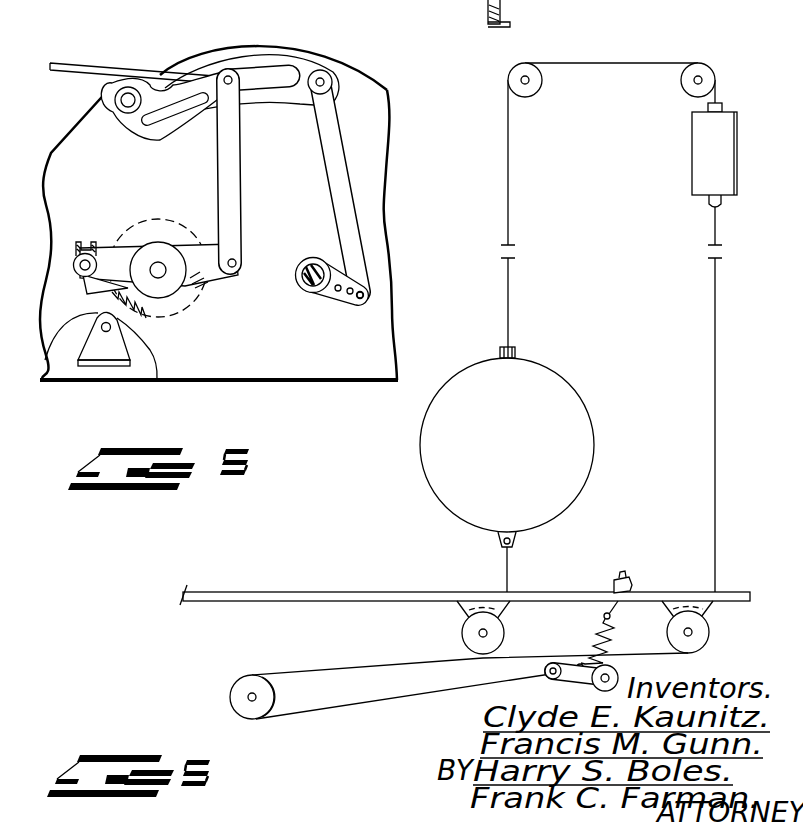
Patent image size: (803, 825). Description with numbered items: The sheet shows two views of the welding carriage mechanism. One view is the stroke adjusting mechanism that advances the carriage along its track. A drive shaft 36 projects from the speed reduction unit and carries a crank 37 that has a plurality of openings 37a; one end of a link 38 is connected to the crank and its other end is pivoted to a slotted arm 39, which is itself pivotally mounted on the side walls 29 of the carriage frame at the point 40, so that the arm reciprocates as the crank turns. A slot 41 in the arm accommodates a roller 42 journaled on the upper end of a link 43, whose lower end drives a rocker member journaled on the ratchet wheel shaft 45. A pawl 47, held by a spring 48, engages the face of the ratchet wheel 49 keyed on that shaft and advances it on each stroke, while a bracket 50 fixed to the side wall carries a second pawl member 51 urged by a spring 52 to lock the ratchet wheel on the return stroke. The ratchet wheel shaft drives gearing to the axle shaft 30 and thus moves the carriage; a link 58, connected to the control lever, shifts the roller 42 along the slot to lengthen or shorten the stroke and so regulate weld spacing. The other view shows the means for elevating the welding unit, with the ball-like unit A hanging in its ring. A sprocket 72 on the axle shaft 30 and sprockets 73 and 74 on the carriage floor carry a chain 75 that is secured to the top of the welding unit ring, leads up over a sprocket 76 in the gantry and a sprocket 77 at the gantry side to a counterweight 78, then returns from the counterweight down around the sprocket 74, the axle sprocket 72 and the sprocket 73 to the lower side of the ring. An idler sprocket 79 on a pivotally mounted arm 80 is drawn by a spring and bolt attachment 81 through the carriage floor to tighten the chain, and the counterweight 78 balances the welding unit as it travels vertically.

In FIG. 5, the side walls 29 is at (376, 257).
In FIG. 6, the axle shaft 30 is at (250, 697).
In FIG. 5, the drive shaft 36 is at (313, 295).
In FIG. 5, the crank 37 is at (368, 295).
In FIG. 5, the openings 37a is at (357, 299).
In FIG. 5, the link 38 is at (350, 187).
In FIG. 5, the slotted arm 39 is at (325, 62).
In FIG. 5, the pivot point 40 is at (115, 99).
In FIG. 5, the slot 41 is at (277, 65).
In FIG. 5, the roller 42 is at (228, 68).
In FIG. 5, the link 43 is at (237, 230).
In FIG. 5, the ratchet wheel shaft 45 is at (165, 275).
In FIG. 5, the pawl 47 is at (85, 295).
In FIG. 5, the spring 48 is at (82, 243).
In FIG. 5, the ratchet wheel 49 is at (143, 213).
In FIG. 5, the bracket 50 is at (110, 350).
In FIG. 5, the pawl member 51 is at (41, 381).
In FIG. 5, the spring 52 is at (153, 367).
In FIG. 5, the link 58 is at (85, 62).
In FIG. 6, the sprocket 72 is at (262, 716).
In FIG. 6, the sprocket 73 is at (462, 630).
In FIG. 6, the sprocket 74 is at (706, 648).
In FIG. 6, the chain 75 is at (510, 230).
In FIG. 6, the sprocket 76 is at (538, 88).
In FIG. 6, the sprocket 77 is at (716, 78).
In FIG. 6, the counterweight 78 is at (737, 163).
In FIG. 6, the idler sprocket 79 is at (620, 667).
In FIG. 6, the pivotally mounted arm 80 is at (563, 663).
In FIG. 6, the spring and bolt attachment 81 is at (587, 634).
In FIG. 6, the ball A is at (602, 380).